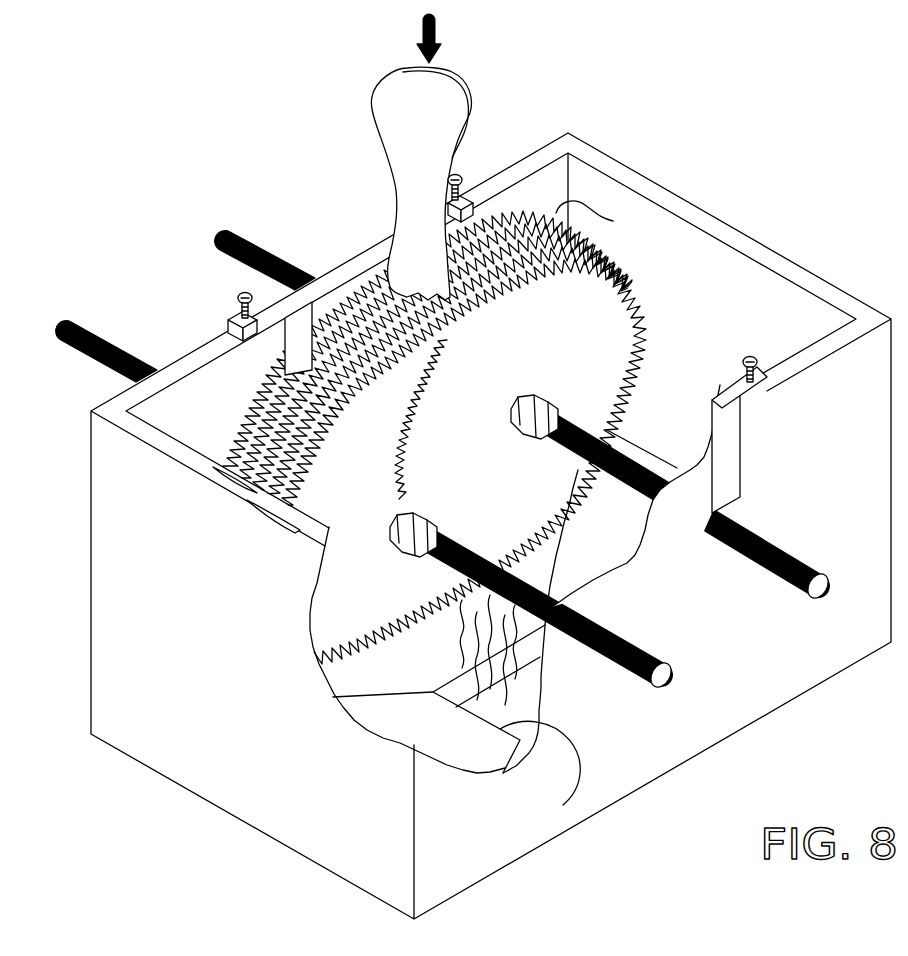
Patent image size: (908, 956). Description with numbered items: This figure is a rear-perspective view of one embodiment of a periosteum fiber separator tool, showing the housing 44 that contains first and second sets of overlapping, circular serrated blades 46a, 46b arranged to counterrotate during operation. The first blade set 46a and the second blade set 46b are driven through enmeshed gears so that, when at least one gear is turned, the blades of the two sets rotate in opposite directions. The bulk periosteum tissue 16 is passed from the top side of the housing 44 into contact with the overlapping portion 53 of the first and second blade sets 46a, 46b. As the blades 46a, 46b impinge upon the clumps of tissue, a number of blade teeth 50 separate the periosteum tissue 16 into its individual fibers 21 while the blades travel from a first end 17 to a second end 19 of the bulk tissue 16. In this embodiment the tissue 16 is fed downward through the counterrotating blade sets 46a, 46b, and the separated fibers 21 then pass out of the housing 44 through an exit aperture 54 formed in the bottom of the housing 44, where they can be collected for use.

The bulk periosteum tissue 16 is at (383, 127).
The second end 19 is at (450, 72).
The first end 17 is at (388, 266).
The blade teeth 50 is at (285, 373).
The overlapping portion 53 is at (450, 347).
The housing 44 is at (824, 296).
The first blade set 46a is at (257, 493).
The second blade set 46b is at (638, 268).
The individual fibers 21 is at (523, 678).
The exit aperture 54 is at (560, 742).